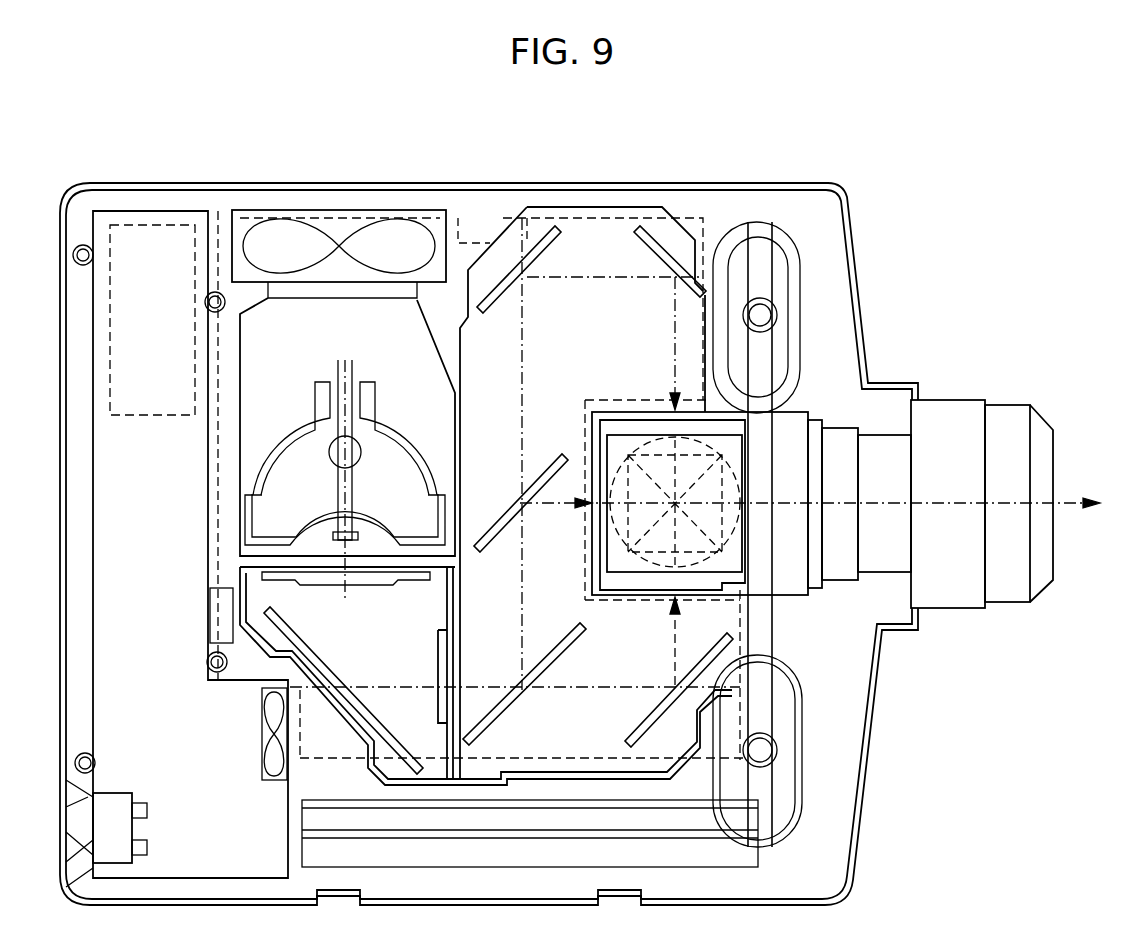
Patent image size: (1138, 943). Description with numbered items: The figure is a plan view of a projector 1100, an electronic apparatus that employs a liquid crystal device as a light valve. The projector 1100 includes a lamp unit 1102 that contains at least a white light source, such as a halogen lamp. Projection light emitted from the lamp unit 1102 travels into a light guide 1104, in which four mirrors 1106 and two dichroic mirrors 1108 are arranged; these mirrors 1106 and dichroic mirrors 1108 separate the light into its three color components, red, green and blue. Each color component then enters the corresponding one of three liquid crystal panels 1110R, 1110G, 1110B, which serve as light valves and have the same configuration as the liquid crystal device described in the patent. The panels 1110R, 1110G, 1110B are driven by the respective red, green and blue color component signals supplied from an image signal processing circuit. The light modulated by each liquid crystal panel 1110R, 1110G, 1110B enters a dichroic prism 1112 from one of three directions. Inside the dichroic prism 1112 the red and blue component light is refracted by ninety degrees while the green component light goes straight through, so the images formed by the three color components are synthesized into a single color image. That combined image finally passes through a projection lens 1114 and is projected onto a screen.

The projector 1100 is at (858, 197).
The lamp unit 1102 is at (397, 340).
The light guide 1104 is at (527, 207).
The mirrors 1106 is at (647, 250).
The dichroic mirrors 1108 is at (520, 506).
The liquid crystal panel 1110R is at (635, 405).
The liquid crystal panel 1110G is at (592, 468).
The liquid crystal panel 1110B is at (627, 603).
The dichroic prism 1112 is at (730, 565).
The projection lens 1114 is at (1018, 415).